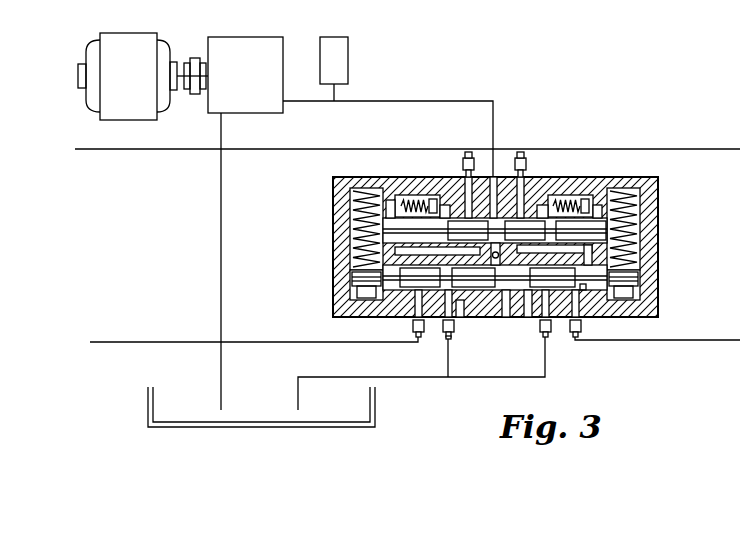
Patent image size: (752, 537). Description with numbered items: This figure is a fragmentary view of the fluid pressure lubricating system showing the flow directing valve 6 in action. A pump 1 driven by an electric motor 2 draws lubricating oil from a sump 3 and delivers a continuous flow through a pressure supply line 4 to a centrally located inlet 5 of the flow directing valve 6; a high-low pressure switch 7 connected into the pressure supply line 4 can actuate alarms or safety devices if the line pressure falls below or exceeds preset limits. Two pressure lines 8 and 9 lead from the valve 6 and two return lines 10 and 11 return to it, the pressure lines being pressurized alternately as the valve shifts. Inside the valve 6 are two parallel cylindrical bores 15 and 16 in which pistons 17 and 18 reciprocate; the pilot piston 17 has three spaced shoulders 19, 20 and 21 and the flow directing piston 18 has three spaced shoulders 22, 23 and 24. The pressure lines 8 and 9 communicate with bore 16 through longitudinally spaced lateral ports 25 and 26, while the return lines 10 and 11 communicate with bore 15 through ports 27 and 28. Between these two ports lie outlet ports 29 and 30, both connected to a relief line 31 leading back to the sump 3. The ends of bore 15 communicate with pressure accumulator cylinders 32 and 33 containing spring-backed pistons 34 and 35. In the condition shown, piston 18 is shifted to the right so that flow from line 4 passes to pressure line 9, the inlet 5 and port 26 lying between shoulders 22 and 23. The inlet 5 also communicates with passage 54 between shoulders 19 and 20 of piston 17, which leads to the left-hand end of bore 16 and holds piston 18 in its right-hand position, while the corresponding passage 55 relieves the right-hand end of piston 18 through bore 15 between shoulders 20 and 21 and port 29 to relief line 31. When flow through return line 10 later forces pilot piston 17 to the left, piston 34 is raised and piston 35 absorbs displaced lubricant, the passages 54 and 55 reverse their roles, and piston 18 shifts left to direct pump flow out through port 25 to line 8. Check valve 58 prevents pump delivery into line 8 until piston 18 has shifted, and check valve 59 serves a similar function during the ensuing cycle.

The pump 1 is at (265, 46).
The electric motor 2 is at (138, 46).
The sump 3 is at (375, 392).
The pressure supply line 4 is at (423, 101).
The inlet 5 is at (478, 318).
The flow directing valve 6 is at (659, 246).
The high-low pressure switch 7 is at (341, 68).
The pressure line 8 is at (642, 149).
The pressure line 9 is at (150, 150).
The return line 10 is at (665, 341).
The return line 11 is at (150, 342).
The cylindrical bore 15 is at (412, 290).
The cylindrical bore 16 is at (390, 200).
The piston 17 is at (528, 318).
The piston 18 is at (542, 205).
The shoulder 19 is at (460, 318).
The shoulder 20 is at (505, 318).
The shoulder 21 is at (557, 320).
The shoulder 22 is at (445, 205).
The shoulder 23 is at (502, 177).
The shoulder 24 is at (566, 195).
The lateral port 25 is at (525, 160).
The lateral port 26 is at (473, 162).
The port 27 is at (583, 290).
The port 28 is at (445, 340).
The outlet port 29 is at (550, 340).
The outlet port 30 is at (452, 338).
The relief line 31 is at (333, 377).
The pressure accumulator cylinder 32 is at (642, 216).
The pressure accumulator cylinder 33 is at (350, 235).
The spring-backed piston 34 is at (642, 288).
The spring-backed piston 35 is at (350, 288).
The passage 54 is at (412, 255).
The passage 55 is at (580, 253).
The check valve 58 is at (570, 195).
The check valve 59 is at (433, 195).